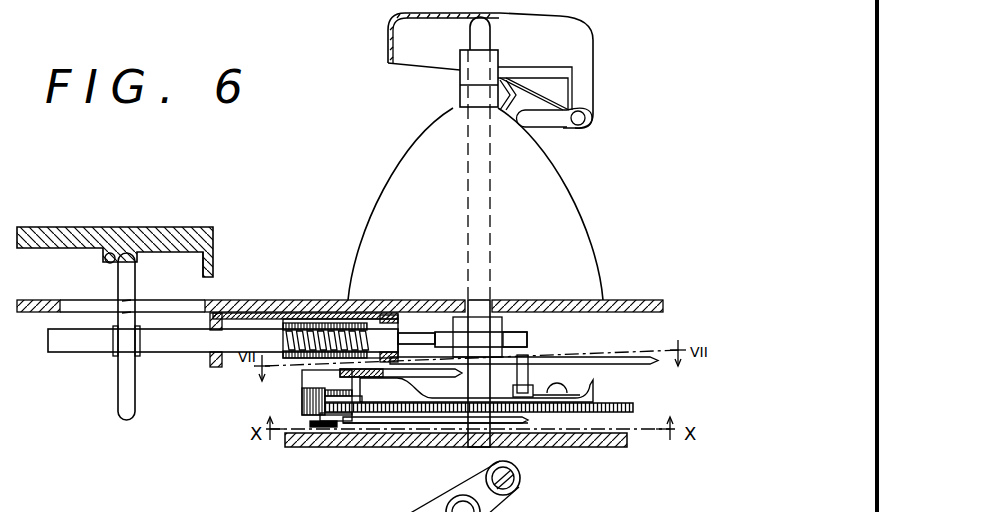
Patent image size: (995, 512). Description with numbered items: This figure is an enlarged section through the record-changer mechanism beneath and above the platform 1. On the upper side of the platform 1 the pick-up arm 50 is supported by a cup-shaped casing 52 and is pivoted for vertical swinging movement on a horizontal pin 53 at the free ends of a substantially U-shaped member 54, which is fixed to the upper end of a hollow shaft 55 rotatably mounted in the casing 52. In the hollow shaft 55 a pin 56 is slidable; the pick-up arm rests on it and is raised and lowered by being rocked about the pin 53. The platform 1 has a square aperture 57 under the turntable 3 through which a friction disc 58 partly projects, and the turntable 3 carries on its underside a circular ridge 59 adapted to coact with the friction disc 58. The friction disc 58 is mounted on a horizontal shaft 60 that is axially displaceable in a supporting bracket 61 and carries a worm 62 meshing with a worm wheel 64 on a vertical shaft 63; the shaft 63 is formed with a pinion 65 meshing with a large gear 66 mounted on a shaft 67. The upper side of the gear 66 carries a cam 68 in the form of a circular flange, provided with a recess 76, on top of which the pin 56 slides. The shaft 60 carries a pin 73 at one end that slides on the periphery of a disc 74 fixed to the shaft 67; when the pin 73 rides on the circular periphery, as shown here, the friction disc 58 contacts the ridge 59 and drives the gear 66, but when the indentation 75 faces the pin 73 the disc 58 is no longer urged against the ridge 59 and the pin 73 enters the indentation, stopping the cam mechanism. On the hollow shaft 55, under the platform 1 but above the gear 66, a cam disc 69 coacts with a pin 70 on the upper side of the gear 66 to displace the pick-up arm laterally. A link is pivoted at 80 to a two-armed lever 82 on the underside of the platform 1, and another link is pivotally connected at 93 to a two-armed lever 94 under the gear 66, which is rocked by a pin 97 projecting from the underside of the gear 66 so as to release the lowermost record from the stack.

The platform 1 is at (268, 300).
The turntable 3 is at (50, 240).
The pick-up arm 50 is at (568, 45).
The cup-shaped casing 52 is at (570, 188).
The horizontal pin 53 is at (587, 128).
The U-shaped member 54 is at (565, 80).
The hollow shaft 55 is at (473, 95).
The pin 56 is at (480, 33).
The square aperture 57 is at (182, 312).
The friction disc 58 is at (127, 372).
The circular ridge 59 is at (110, 253).
The horizontal shaft 60 is at (65, 342).
The supporting bracket 61 is at (213, 360).
The worm 62 is at (330, 320).
The vertical shaft 63 is at (328, 375).
The worm wheel 64 is at (303, 323).
The pinion 65 is at (300, 398).
The large gear 66 is at (580, 407).
The shaft 67 is at (480, 420).
The cam 68 is at (597, 395).
The cam disc 69 is at (643, 357).
The pin 70 is at (522, 373).
The pin 73 is at (448, 337).
The disc 74 is at (410, 338).
The indentation 75 is at (527, 343).
The recess 76 is at (442, 388).
The pivot 80 is at (450, 508).
The two-armed lever 82 is at (403, 373).
The pivotal connection 93 is at (520, 484).
The two-armed lever 94 is at (407, 422).
The pin 97 is at (355, 372).